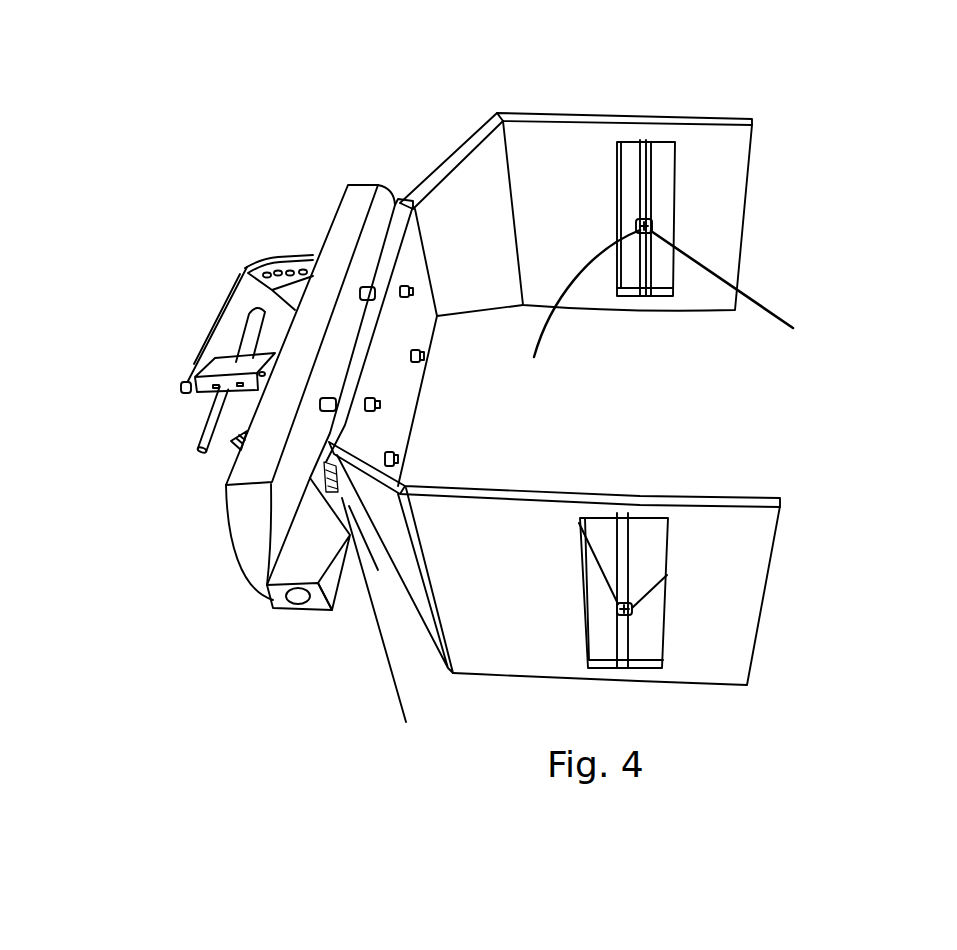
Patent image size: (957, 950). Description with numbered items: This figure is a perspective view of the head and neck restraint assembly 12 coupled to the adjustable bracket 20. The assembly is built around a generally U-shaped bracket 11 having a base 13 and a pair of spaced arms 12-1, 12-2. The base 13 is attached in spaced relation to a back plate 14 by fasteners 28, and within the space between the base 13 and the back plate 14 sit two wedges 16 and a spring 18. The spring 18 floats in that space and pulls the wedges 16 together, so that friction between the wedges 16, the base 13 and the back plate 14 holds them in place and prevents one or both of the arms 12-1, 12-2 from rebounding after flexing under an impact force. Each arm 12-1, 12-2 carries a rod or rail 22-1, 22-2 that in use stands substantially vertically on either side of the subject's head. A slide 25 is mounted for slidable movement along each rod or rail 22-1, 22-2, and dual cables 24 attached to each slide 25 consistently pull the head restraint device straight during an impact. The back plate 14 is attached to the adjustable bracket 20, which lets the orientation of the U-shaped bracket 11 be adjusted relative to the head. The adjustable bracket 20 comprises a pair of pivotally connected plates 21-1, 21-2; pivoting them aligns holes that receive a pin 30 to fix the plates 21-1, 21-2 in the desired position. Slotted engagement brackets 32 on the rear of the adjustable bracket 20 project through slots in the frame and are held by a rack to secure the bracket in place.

The U-shaped bracket 11 is at (781, 153).
The head and neck restraint assembly 12 is at (316, 665).
The arm 12-1 is at (723, 233).
The arm 12-2 is at (753, 553).
The base 13 is at (417, 322).
The back plate 14 is at (362, 197).
The wedges 16 is at (403, 198).
The spring 18 is at (386, 642).
The adjustable bracket 20 is at (240, 288).
The plate 21-1 is at (315, 262).
The plate 21-2 is at (228, 293).
The rod or rail 22-1 is at (650, 165).
The rod or rail 22-2 is at (623, 520).
The dual cables 24 is at (773, 310).
The slide 25 is at (652, 226).
The fasteners 28 is at (407, 292).
The pin 30 is at (200, 452).
The slotted engagement brackets 32 is at (178, 380).